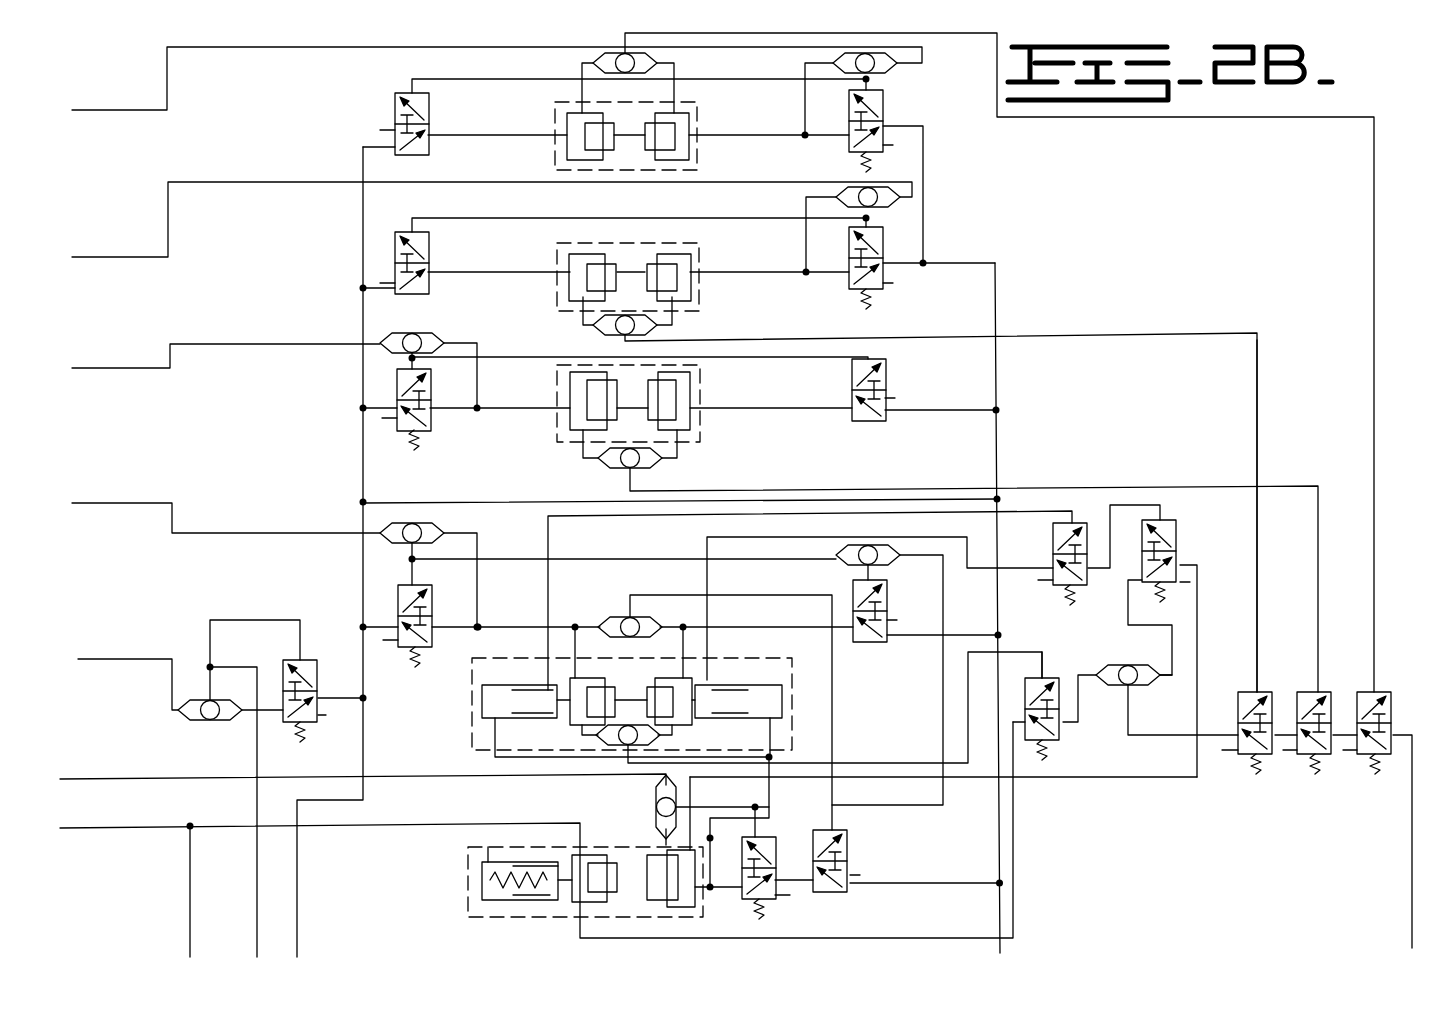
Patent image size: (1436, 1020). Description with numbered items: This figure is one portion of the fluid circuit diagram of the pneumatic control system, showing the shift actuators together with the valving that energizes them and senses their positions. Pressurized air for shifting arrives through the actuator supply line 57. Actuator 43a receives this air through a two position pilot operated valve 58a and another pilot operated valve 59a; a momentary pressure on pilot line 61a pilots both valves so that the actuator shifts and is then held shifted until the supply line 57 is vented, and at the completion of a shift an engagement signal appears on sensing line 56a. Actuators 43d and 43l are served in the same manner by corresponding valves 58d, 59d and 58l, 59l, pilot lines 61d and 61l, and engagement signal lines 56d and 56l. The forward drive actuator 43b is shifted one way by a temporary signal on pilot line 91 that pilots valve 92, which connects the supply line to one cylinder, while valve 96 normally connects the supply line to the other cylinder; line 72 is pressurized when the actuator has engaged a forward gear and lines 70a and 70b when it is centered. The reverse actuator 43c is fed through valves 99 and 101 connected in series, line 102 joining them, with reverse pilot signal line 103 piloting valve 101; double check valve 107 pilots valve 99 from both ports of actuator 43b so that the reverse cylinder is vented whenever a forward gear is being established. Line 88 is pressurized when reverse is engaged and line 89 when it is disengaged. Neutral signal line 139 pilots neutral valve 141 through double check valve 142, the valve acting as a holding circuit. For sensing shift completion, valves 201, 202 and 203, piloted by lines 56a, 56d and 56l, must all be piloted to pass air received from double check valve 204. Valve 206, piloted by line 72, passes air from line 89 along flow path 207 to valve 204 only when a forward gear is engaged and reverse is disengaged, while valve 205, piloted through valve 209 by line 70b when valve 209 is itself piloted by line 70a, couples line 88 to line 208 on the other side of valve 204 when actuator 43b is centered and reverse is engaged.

The pneumatic actuator 43a is at (546, 307).
The pneumatic actuator 43b is at (476, 710).
The reverse actuator 43c is at (461, 879).
The pneumatic actuator 43d is at (546, 114).
The pneumatic actuator 43l is at (548, 426).
The sensing line 56a is at (1083, 337).
The engagement signal line 56d is at (1032, 119).
The engagement signal line 56l is at (1085, 489).
The actuator supply line 57 is at (363, 568).
The two position pilot operated valve 58a is at (430, 243).
The two position pilot operated valve 58d is at (401, 94).
The two position pilot operated valve 58l is at (433, 427).
The two position pilot operated valve 59a is at (850, 283).
The two position pilot operated valve 59d is at (884, 103).
The two position pilot operated valve 59l is at (886, 374).
The pilot line 61a is at (198, 185).
The pilot signal line 61d is at (203, 48).
The pilot signal line 61l is at (183, 346).
The signal line 70a is at (575, 518).
The signal line 70b is at (808, 527).
The sensing line 72 is at (1012, 652).
The sensing line 88 is at (1070, 778).
The sensing line 89 is at (1013, 800).
The pilot line 91 is at (205, 532).
The two position valve 92 is at (434, 613).
The two position pilot operated valve 96 is at (887, 598).
The two position pilot operated valve 99 is at (850, 833).
The two position pilot operated valve 101 is at (768, 906).
The line 102 is at (797, 878).
The reverse pilot signal line 103 is at (153, 779).
The double check valve 107 is at (613, 619).
The neutral signal line 139 is at (186, 659).
The neutral valve 141 is at (318, 672).
The double check valve 142 is at (182, 719).
The two-position valve 201 is at (1238, 692).
The two-position valve 202 is at (1357, 692).
The two-position valve 203 is at (1298, 692).
The double check valve 204 is at (1143, 686).
The two-position pilot operated valve 205 is at (1180, 551).
The two-position pilot operated valve 206 is at (1025, 708).
The flow path 207 is at (1078, 722).
The line 208 is at (1132, 626).
The two-position valve 209 is at (1053, 560).